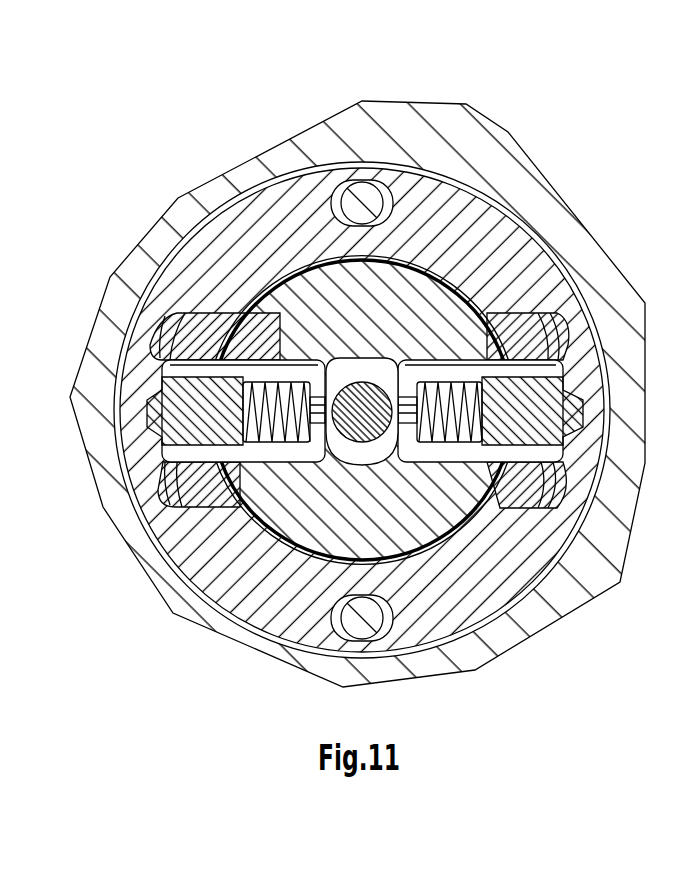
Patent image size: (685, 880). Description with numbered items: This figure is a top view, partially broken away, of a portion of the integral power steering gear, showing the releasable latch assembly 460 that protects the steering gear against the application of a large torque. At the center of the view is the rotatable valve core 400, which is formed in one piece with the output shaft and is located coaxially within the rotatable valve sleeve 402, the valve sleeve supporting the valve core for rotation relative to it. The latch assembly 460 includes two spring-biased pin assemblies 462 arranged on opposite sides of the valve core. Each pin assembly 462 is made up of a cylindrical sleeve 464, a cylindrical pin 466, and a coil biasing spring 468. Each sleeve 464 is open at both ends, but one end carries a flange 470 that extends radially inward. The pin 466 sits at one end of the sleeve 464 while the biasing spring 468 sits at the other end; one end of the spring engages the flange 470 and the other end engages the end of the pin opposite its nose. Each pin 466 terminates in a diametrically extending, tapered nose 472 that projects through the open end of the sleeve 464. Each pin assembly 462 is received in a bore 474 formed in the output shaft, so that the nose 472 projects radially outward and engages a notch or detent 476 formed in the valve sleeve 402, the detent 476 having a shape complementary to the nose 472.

The valve core 400 is at (345, 290).
The valve sleeve 402 is at (421, 205).
The latch assembly 460 is at (160, 372).
The pin assembly 462 is at (170, 538).
The sleeve 464 is at (178, 198).
The pin 466 is at (185, 440).
The biasing spring 468 is at (150, 290).
The flange 470 is at (348, 468).
The tapered nose 472 is at (147, 410).
The bore 474 is at (268, 368).
The detent 476 is at (160, 358).